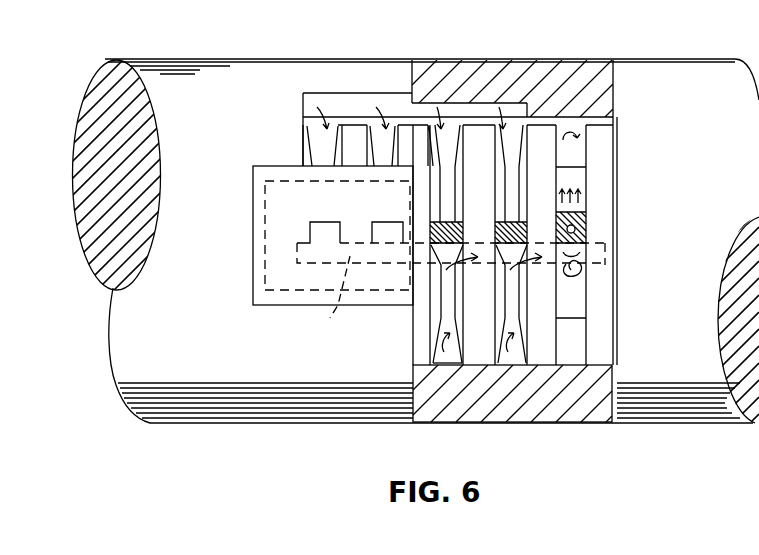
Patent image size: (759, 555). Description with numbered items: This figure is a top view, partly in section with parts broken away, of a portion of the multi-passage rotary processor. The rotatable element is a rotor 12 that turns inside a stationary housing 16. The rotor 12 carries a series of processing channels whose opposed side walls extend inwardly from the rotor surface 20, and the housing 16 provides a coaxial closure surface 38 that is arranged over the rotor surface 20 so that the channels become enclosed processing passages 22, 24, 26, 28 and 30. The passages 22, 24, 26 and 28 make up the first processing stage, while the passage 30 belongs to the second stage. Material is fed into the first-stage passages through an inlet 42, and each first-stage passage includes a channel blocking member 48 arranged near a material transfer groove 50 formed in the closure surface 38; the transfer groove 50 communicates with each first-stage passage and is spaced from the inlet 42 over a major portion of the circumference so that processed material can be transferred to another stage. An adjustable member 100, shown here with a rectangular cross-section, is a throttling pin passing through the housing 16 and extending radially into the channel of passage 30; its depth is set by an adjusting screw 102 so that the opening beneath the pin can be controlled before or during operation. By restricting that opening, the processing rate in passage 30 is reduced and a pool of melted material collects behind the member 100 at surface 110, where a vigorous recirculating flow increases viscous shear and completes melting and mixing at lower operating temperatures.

The rotor 12 is at (428, 343).
The housing 16 is at (276, 416).
The rotor surface 20 is at (482, 367).
The processing passage 22 is at (342, 125).
The processing passage 24 is at (410, 124).
The processing passage 26 is at (452, 123).
The processing passage 28 is at (512, 121).
The processing passage 30 is at (595, 198).
The closure surface 38 is at (448, 363).
The inlet 42 is at (343, 93).
The channel blocking member 48 is at (325, 228).
The material transfer groove 50 is at (626, 283).
The adjustable member 100 is at (586, 219).
The adjusting screw 102 is at (576, 230).
The surface 110 is at (586, 248).